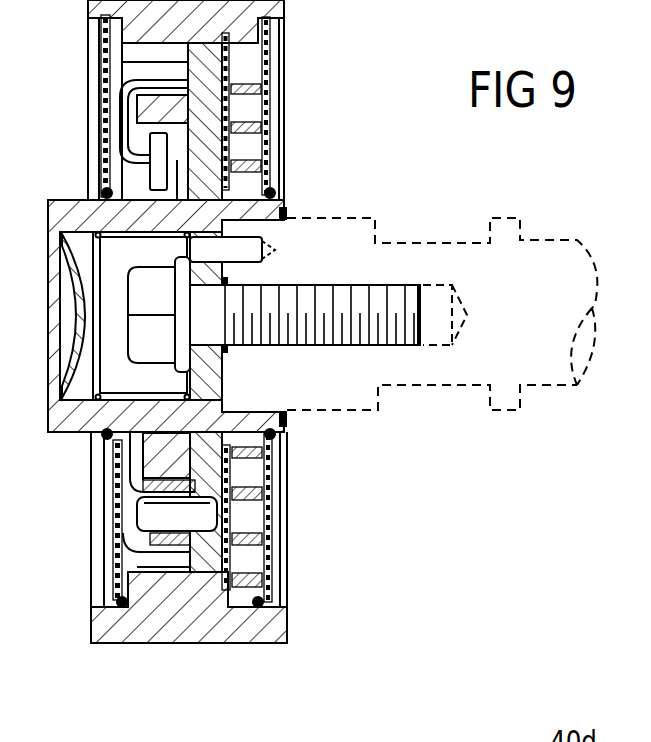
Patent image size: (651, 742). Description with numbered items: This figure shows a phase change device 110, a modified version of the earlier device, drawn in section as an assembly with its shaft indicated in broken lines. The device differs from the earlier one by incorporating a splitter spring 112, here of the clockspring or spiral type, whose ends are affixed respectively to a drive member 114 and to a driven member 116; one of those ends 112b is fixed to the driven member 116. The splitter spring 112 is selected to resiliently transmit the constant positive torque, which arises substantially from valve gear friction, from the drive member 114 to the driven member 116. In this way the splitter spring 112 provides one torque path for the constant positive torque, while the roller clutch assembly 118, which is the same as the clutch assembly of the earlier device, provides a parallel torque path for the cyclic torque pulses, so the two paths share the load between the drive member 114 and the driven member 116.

The phase change device 110 is at (372, 482).
The splitter spring 112 is at (262, 551).
The end of splitter spring 112b is at (258, 466).
The drive member 114 is at (178, 630).
The driven member 116 is at (213, 147).
The roller clutch assembly 118 is at (112, 71).